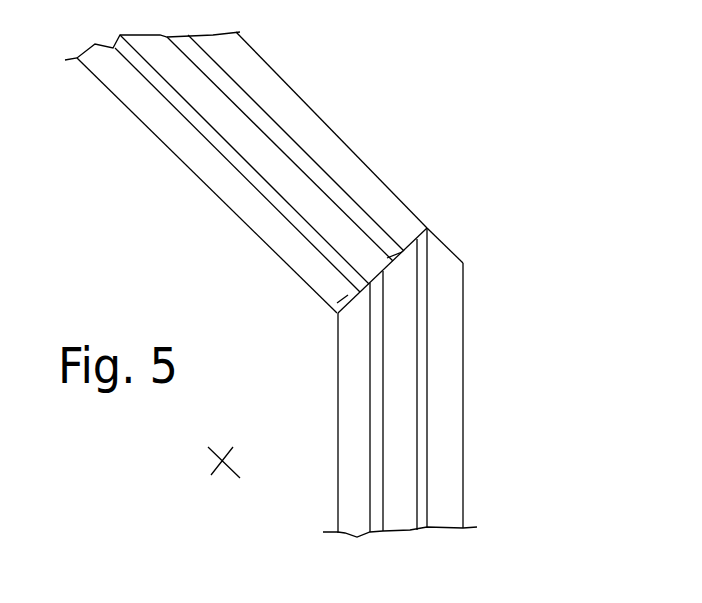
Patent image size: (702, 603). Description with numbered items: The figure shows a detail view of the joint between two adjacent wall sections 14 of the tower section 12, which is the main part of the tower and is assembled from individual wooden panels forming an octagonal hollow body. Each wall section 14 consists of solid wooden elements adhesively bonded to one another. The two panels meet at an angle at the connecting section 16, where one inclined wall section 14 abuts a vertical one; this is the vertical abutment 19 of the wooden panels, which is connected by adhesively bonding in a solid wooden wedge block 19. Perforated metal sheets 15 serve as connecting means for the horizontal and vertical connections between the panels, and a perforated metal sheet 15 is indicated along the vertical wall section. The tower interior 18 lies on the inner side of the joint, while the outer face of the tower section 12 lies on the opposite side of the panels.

The tower section 12 is at (584, 251).
The wall section 14 is at (338, 170).
The perforated metal sheet 15 is at (424, 393).
The connecting section 16 is at (445, 213).
The tower interior 18 is at (152, 255).
The wedge block 19 is at (337, 312).